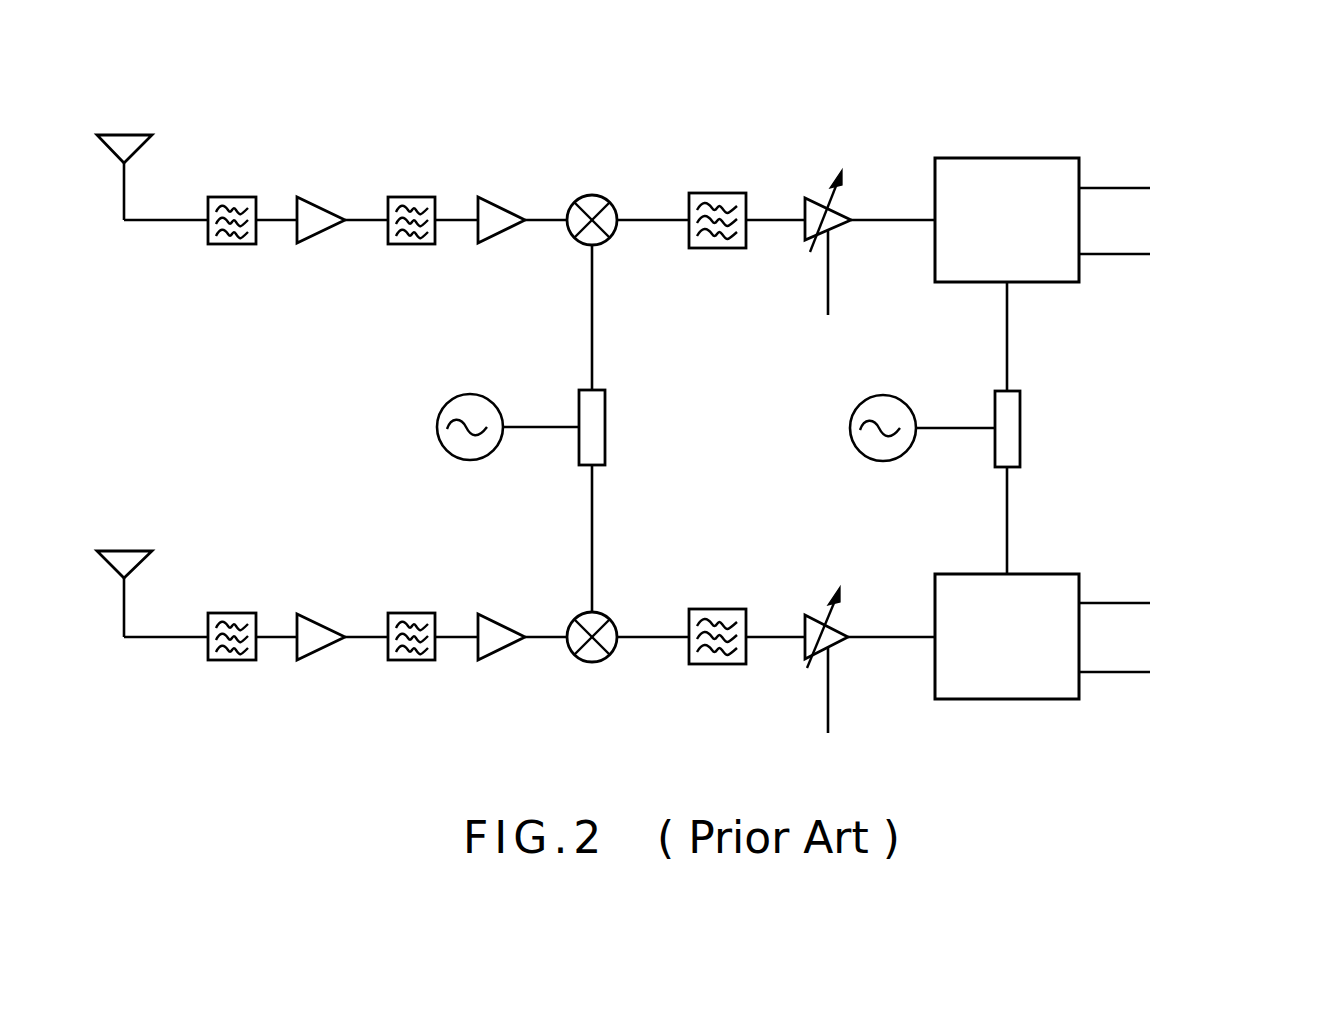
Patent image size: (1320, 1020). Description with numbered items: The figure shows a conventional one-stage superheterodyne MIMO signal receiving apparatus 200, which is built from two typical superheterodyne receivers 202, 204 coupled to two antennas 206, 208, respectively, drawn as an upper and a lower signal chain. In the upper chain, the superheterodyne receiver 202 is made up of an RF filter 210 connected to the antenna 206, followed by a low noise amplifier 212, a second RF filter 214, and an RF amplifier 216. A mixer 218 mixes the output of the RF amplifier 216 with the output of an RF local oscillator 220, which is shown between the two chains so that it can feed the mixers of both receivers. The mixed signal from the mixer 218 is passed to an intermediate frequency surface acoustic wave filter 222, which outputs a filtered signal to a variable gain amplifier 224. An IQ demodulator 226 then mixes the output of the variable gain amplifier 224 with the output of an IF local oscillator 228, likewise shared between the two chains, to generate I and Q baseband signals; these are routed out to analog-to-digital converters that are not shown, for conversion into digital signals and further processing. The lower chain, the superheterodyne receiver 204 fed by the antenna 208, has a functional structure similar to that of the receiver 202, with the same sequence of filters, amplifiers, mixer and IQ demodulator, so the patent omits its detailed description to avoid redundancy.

The superheterodyne MIMO signal receiving apparatus 200 is at (1227, 99).
The superheterodyne receiver 202 is at (645, 115).
The superheterodyne receiver 204 is at (642, 695).
The antenna 206 is at (110, 161).
The antenna 208 is at (110, 576).
The RF filter 210 is at (233, 197).
The low noise amplifier 212 is at (317, 244).
The RF filter 214 is at (413, 197).
The RF amplifier 216 is at (500, 244).
The mixer 218 is at (593, 195).
The RF local oscillator 220 is at (607, 425).
The intermediate frequency surface acoustic wave (IF SAW) filter 222 is at (717, 192).
The variable gain amplifier 224 is at (836, 234).
The IQ demodulator 226 is at (992, 158).
The IF local oscillator 228 is at (1021, 425).